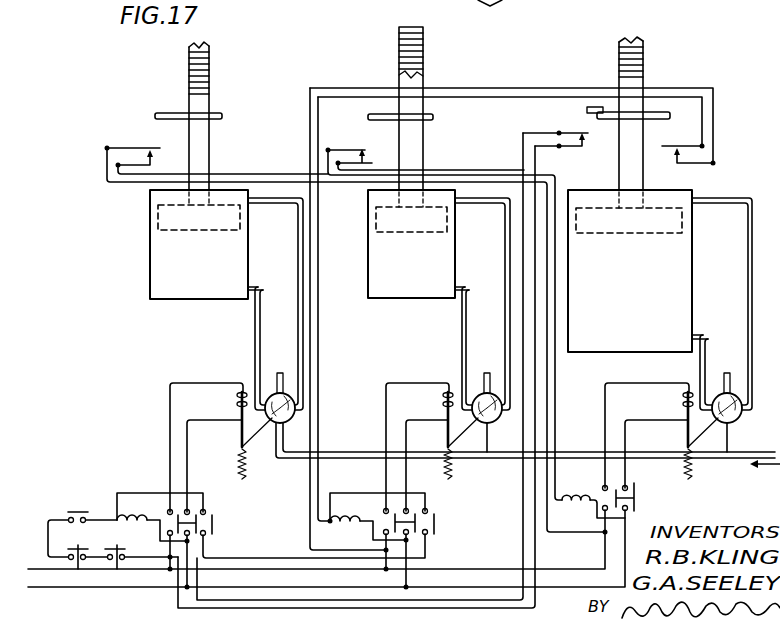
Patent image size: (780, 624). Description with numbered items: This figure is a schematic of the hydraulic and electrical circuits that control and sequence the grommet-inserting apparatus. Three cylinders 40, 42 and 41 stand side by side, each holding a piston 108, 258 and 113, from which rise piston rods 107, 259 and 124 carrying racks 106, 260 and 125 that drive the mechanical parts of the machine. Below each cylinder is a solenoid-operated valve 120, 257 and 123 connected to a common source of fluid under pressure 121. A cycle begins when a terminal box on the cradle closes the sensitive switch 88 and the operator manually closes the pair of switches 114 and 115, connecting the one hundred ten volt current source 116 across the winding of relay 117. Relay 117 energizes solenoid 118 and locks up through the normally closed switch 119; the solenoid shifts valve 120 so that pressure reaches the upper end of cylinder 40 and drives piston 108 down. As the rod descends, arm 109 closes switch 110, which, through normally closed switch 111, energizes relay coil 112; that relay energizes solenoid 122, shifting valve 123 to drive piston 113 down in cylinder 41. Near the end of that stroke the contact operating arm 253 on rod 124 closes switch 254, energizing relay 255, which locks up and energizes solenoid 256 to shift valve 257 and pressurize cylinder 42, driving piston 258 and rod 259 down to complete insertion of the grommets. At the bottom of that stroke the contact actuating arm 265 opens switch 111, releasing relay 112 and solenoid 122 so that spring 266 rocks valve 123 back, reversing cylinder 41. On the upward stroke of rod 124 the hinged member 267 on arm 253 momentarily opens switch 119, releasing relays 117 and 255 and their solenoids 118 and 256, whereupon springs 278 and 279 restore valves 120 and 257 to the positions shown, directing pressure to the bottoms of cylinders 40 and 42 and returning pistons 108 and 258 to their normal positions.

The cylinder 40 is at (151, 257).
The cylinder 41 is at (700, 284).
The cylinder 42 is at (385, 300).
The sensitive switch 88 is at (73, 510).
The rack 106 is at (207, 70).
The piston rod 107 is at (203, 142).
The piston 108 is at (157, 220).
The arm 109 is at (171, 112).
The switch 110 is at (147, 153).
The normally closed switch 111 is at (358, 152).
The relay coil 112 is at (571, 493).
The piston 113 is at (672, 208).
The switch 114 is at (80, 590).
The switch 115 is at (117, 590).
The 110 volt current source 116 is at (47, 589).
The relay 117 is at (135, 494).
The solenoid 118 is at (238, 399).
The normally closed switch 119 is at (573, 132).
The valve 120 is at (270, 392).
The source of fluid under pressure 121 is at (742, 455).
The solenoid 122 is at (683, 399).
The valve 123 is at (736, 393).
The piston rod 124 is at (623, 158).
The rack 125 is at (645, 47).
The contact operating arm 253 is at (662, 108).
The switch 254 is at (690, 154).
The relay 255 is at (352, 512).
The solenoid 256 is at (444, 400).
The valve 257 is at (492, 373).
The piston 258 is at (437, 205).
The piston rod 259 is at (420, 137).
The rack 260 is at (399, 47).
The contact actuating arm 265 is at (438, 116).
The spring 266 is at (694, 472).
The hinged member 267 is at (596, 106).
The spring 278 is at (247, 471).
The spring 279 is at (455, 471).